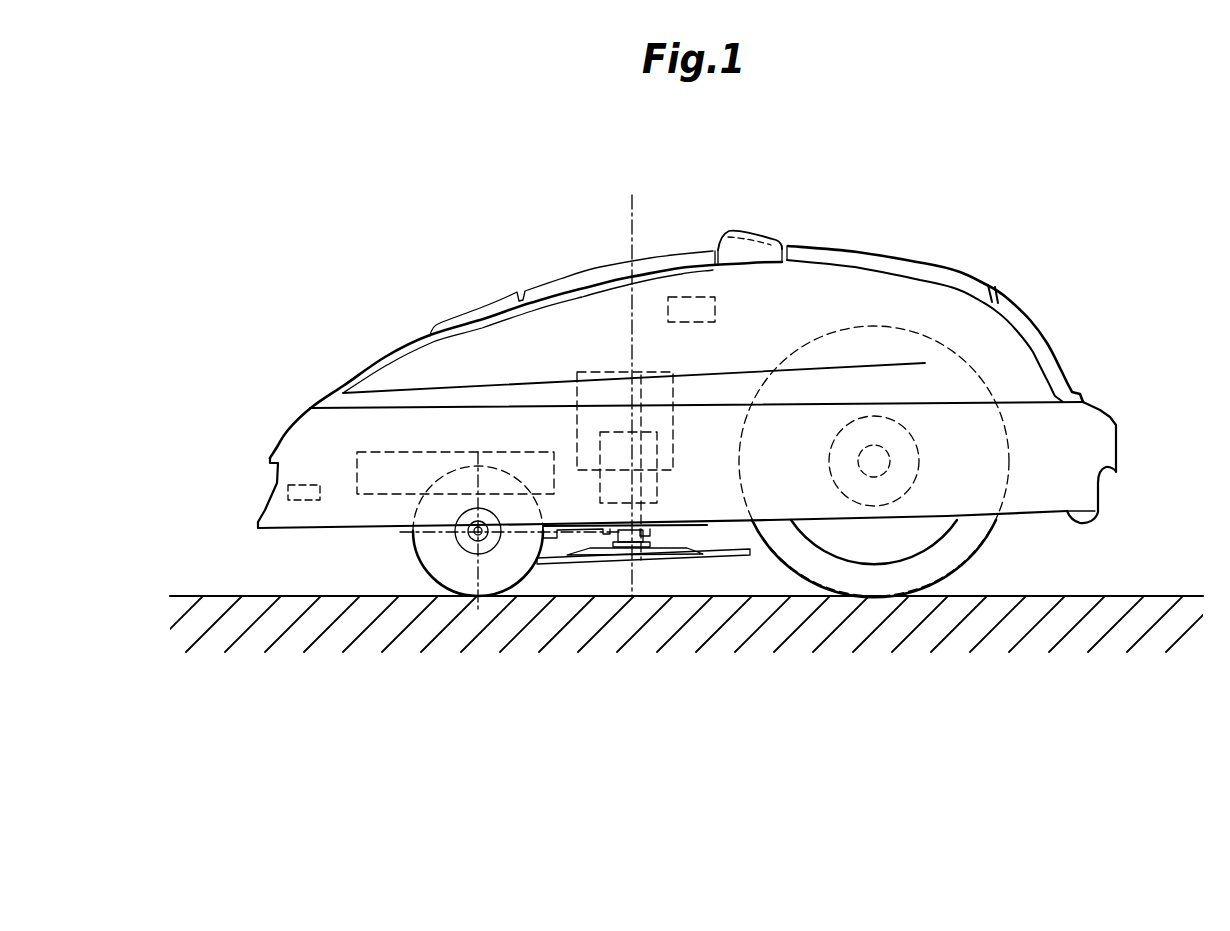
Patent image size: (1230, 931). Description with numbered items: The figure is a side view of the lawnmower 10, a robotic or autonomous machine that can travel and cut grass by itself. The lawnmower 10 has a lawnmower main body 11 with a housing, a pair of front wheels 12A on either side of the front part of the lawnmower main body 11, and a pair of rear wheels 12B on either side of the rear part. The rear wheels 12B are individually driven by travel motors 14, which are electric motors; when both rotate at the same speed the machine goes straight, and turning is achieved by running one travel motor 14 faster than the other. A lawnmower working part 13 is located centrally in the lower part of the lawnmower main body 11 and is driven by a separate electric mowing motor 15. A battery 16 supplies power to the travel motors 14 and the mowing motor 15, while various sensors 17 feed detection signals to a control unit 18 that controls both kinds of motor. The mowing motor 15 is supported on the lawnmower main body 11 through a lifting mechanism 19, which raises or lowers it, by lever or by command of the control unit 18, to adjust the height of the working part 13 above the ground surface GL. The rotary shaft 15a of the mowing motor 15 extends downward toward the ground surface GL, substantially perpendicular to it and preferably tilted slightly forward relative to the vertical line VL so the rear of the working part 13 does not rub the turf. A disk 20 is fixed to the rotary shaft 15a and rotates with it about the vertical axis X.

The lawnmower 10 is at (333, 256).
The lawnmower main body 11 is at (900, 286).
The front wheels 12A is at (432, 556).
The rear wheels 12B is at (950, 550).
The lawnmower working part 13 is at (688, 567).
The travel motors 14 is at (915, 438).
The mowing motor 15 is at (657, 463).
The rotary shaft 15a is at (643, 537).
The battery 16 is at (396, 452).
The sensors 17 is at (295, 485).
The control unit 18 is at (715, 315).
The lifting mechanism 19 is at (577, 397).
The disk 20 is at (737, 560).
The vertical axis X is at (630, 427).
The vertical line through blade axis VL is at (631, 208).
The ground surface GL is at (1165, 595).